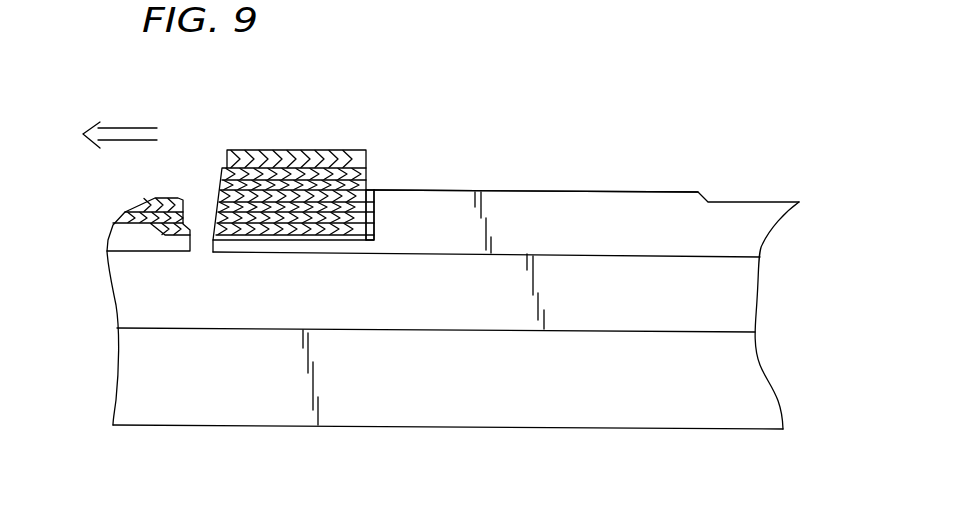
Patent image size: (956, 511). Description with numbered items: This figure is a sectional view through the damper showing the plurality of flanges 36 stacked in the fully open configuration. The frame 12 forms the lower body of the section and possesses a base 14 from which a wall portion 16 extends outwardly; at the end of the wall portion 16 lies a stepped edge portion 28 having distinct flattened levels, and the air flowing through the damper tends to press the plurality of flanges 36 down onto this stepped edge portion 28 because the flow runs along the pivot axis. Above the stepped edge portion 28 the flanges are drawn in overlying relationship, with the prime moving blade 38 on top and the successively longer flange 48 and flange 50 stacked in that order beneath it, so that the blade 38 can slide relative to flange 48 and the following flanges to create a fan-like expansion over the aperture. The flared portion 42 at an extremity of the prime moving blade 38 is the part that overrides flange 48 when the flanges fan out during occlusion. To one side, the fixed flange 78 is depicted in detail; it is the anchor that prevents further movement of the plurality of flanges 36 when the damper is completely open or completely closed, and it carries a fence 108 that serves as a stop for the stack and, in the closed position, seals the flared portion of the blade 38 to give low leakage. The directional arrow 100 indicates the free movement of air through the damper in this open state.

The frame 12 is at (690, 433).
The base 14 is at (135, 403).
The wall portion 16 is at (135, 316).
The stepped edge portion 28 is at (594, 205).
The plurality of flanges 36 is at (265, 196).
The prime moving blade 38 is at (298, 158).
The flared portion 42 is at (296, 134).
The flange 48 is at (222, 171).
The flange 50 is at (217, 192).
The fixed flange 78 is at (246, 232).
The directional arrow 100 is at (128, 132).
The fence 108 is at (375, 205).